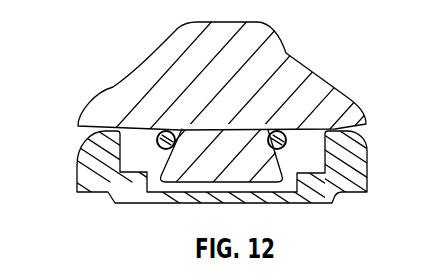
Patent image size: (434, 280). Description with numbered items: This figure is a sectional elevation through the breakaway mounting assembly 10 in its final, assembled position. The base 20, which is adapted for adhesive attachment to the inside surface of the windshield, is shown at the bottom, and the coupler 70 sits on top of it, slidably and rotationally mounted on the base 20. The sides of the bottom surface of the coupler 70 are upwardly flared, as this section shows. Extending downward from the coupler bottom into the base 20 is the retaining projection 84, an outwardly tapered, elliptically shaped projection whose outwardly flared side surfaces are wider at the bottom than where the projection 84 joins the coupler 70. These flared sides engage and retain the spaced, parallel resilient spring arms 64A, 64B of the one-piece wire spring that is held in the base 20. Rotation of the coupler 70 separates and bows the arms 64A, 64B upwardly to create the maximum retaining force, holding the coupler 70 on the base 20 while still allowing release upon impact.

The breakaway mounting assembly 10 is at (223, 129).
The base 20 is at (70, 162).
The coupler 70 is at (293, 53).
The retaining projection 84 is at (198, 172).
The retaining arm 64A is at (288, 139).
The retaining arm 64B is at (157, 134).